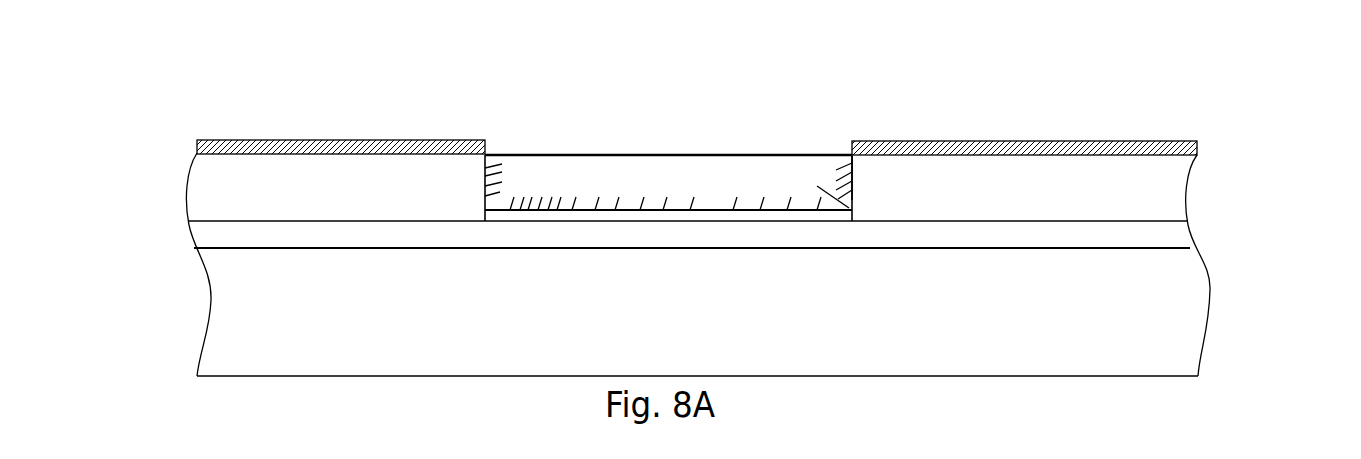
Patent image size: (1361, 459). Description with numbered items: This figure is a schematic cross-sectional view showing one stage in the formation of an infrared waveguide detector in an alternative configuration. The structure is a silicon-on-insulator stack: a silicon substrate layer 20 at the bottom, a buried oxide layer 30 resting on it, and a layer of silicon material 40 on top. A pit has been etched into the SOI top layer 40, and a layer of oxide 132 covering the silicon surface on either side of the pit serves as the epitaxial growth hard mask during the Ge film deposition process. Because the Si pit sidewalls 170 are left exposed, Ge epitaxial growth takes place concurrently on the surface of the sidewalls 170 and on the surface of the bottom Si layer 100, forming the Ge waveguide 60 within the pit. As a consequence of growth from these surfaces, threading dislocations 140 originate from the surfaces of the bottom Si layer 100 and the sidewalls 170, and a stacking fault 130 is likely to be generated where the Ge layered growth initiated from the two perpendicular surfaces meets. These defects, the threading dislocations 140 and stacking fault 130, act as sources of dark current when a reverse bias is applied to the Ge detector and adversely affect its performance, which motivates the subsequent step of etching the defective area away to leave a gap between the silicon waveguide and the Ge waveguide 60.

The silicon substrate layer 20 is at (1178, 322).
The buried oxide layer 30 is at (1172, 233).
The layer of silicon material 40 is at (222, 188).
The Ge waveguide 60 is at (713, 182).
The bottom Si layer 100 is at (768, 213).
The stacking fault 130 is at (485, 207).
The layer of oxide 132 is at (343, 147).
The threading dislocation 140 is at (842, 167).
The Si pit sidewalls 170 is at (845, 183).